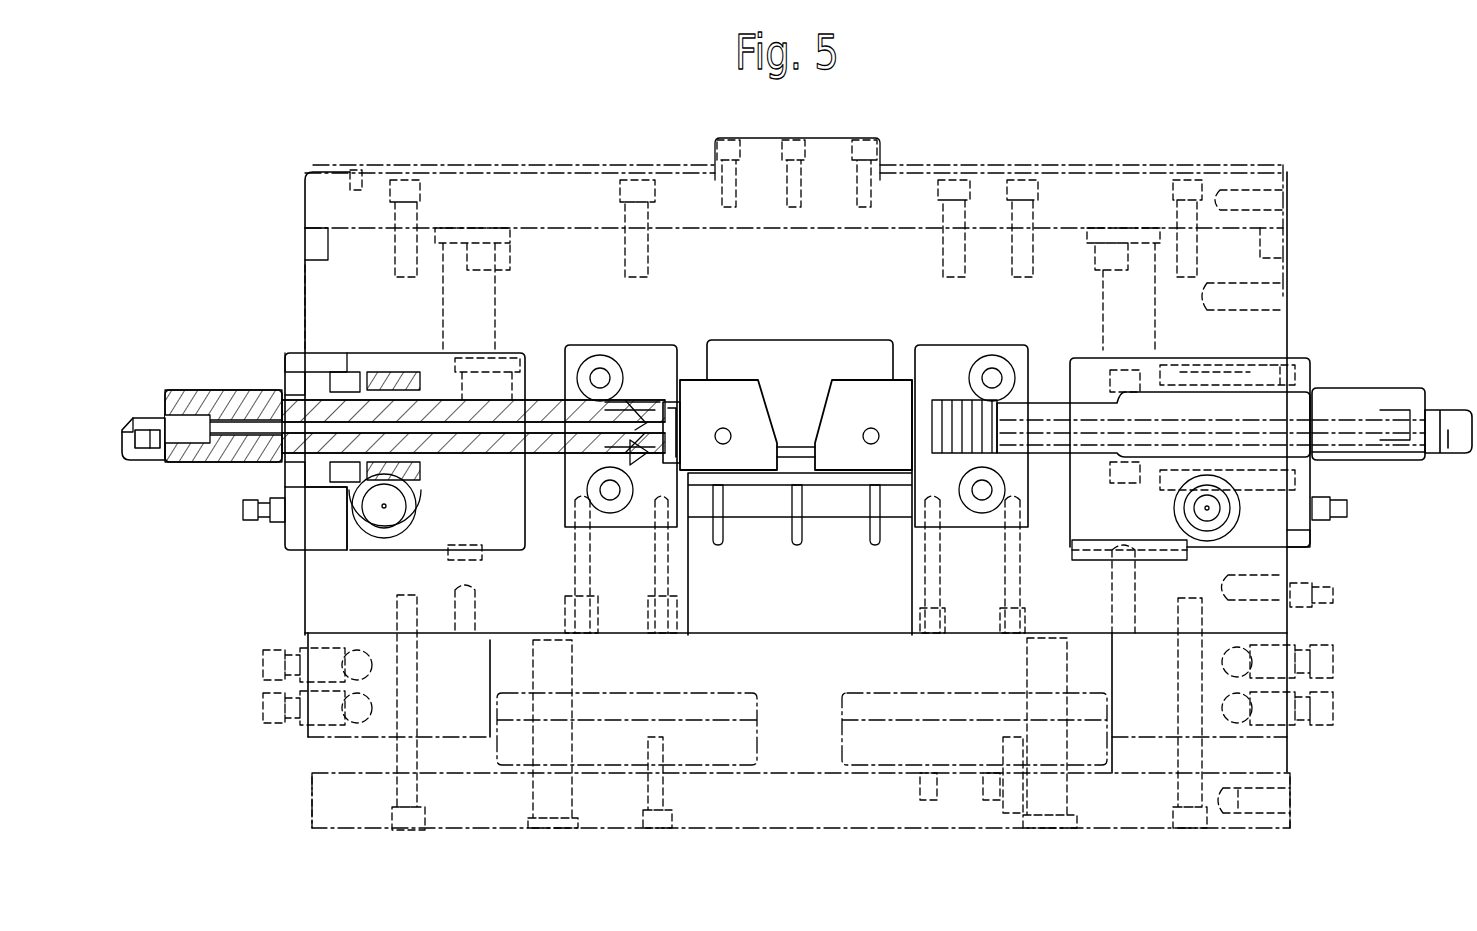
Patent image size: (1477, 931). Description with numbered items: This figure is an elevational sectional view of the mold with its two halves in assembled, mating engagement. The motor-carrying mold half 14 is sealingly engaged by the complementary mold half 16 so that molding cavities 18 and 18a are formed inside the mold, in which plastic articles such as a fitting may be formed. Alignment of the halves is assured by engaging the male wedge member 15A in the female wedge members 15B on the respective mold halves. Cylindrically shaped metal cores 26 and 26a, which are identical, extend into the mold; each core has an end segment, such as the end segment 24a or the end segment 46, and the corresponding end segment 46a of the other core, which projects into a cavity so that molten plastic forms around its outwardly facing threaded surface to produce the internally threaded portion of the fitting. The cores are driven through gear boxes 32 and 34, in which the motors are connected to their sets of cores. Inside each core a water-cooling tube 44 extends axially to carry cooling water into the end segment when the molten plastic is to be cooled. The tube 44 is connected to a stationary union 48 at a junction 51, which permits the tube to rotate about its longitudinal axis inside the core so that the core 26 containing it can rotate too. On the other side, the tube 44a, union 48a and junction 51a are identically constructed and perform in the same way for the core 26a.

The motor-carrying mold half 14 is at (287, 740).
The complementary mold half 16 is at (284, 184).
The male wedge member 15A is at (793, 392).
The female wedge members 15B is at (735, 387).
The cavity 18 is at (965, 385).
The cavity 18a is at (625, 397).
The end segment 24a is at (657, 462).
The core 26 is at (1082, 405).
The core 26a is at (510, 443).
The gear box 32 is at (1292, 530).
The gear box 34 is at (303, 530).
The water-cooling tube 44 is at (1325, 415).
The water-cooling tube 44a is at (285, 400).
The end segment 46 is at (1290, 560).
The shaft end piece 46a is at (660, 400).
The union 48 is at (1345, 455).
The union 48a is at (228, 464).
The junction 51 is at (1452, 422).
The junction 51a is at (147, 422).